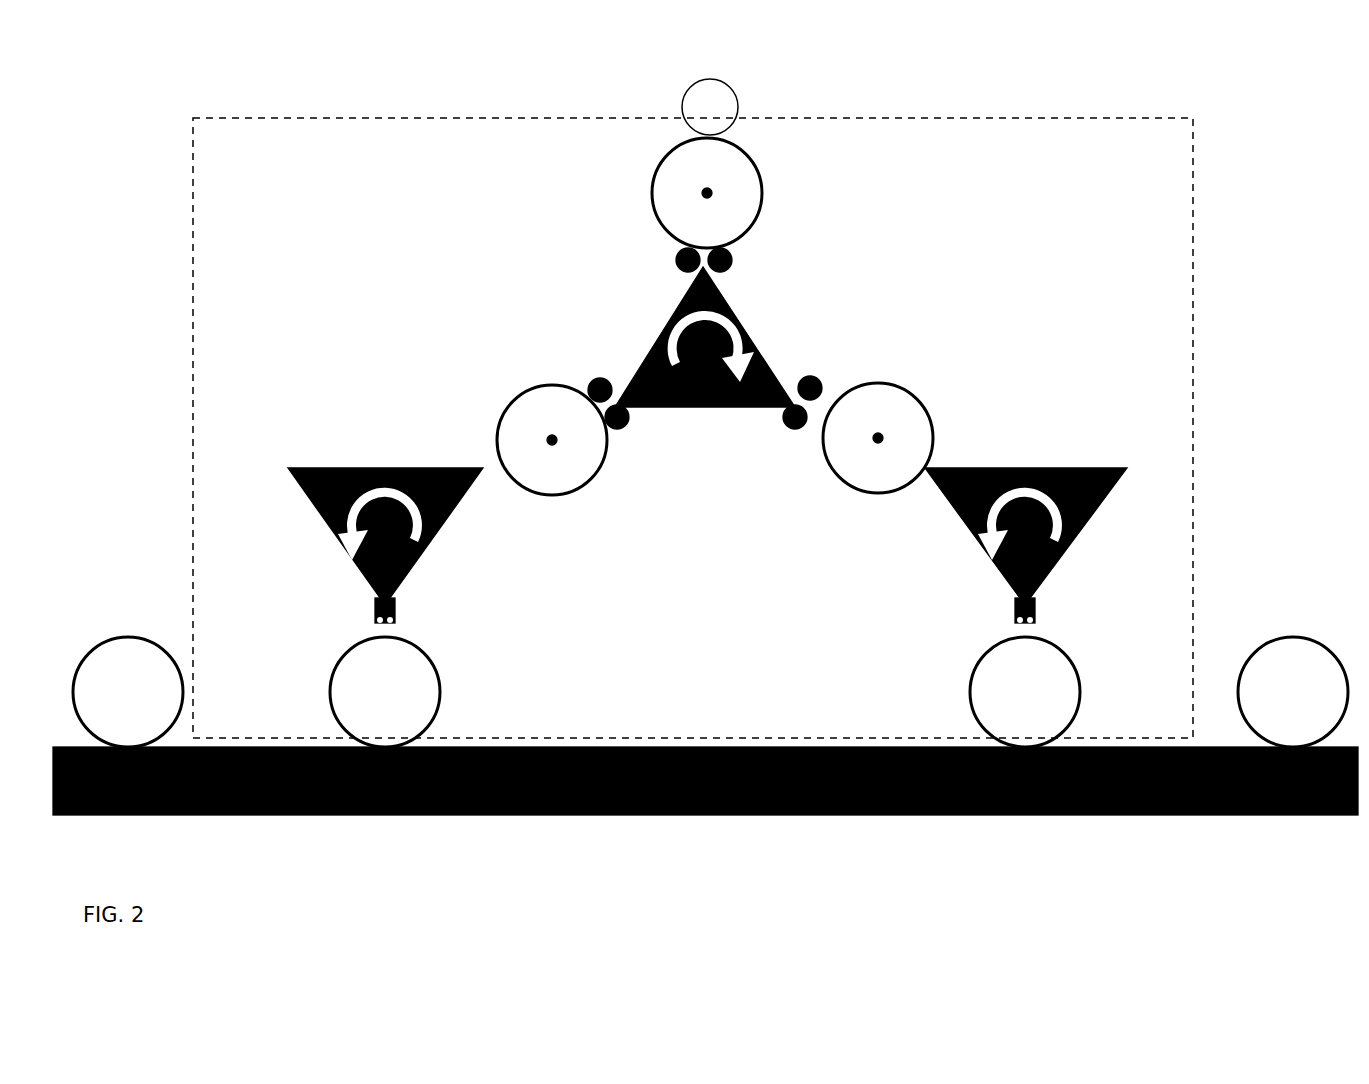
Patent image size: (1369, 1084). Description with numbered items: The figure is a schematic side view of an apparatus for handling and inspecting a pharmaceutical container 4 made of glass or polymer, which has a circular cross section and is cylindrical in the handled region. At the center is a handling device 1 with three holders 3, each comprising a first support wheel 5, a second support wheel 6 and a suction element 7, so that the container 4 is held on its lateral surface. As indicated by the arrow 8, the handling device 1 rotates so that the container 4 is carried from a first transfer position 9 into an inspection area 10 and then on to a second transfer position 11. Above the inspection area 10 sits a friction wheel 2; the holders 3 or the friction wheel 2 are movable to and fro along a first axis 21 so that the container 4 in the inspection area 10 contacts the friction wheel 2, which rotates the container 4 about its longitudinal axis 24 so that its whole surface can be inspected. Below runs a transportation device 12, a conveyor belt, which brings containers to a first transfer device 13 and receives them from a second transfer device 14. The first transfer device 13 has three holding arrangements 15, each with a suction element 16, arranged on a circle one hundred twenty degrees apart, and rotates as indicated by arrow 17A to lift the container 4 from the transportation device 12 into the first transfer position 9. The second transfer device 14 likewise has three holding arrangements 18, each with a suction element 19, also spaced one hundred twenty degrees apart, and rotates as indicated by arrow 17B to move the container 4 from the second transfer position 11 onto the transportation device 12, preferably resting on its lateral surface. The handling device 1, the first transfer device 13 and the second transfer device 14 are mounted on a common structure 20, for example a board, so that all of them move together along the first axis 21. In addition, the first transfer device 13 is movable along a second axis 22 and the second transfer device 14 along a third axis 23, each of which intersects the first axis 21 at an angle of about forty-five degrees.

The handling device 1 is at (548, 268).
The friction wheel 2 is at (717, 120).
The holders 3 is at (652, 270).
The pharmaceutical container 4 is at (760, 175).
The first support wheel 5 is at (674, 262).
The second support wheel 6 is at (733, 261).
The suction element 7 is at (645, 408).
The arrow 8 is at (760, 332).
The first transfer position 9 is at (478, 338).
The inspection area 10 is at (555, 178).
The second transfer position 11 is at (973, 258).
The transportation device 12 is at (745, 747).
The first transfer device 13 is at (360, 468).
The second transfer device 14 is at (1030, 468).
The holding arrangements 15 is at (305, 400).
The suction element 16 is at (483, 466).
The arrow 17A is at (425, 565).
The arrow 17B is at (1005, 468).
The holding arrangements 18 is at (919, 503).
The suction element 19 is at (1002, 622).
The structure 20 is at (1197, 118).
The first axis 21 is at (167, 130).
The second axis 22 is at (288, 418).
The third axis 23 is at (1173, 452).
The longitudinal axis 24 is at (712, 193).